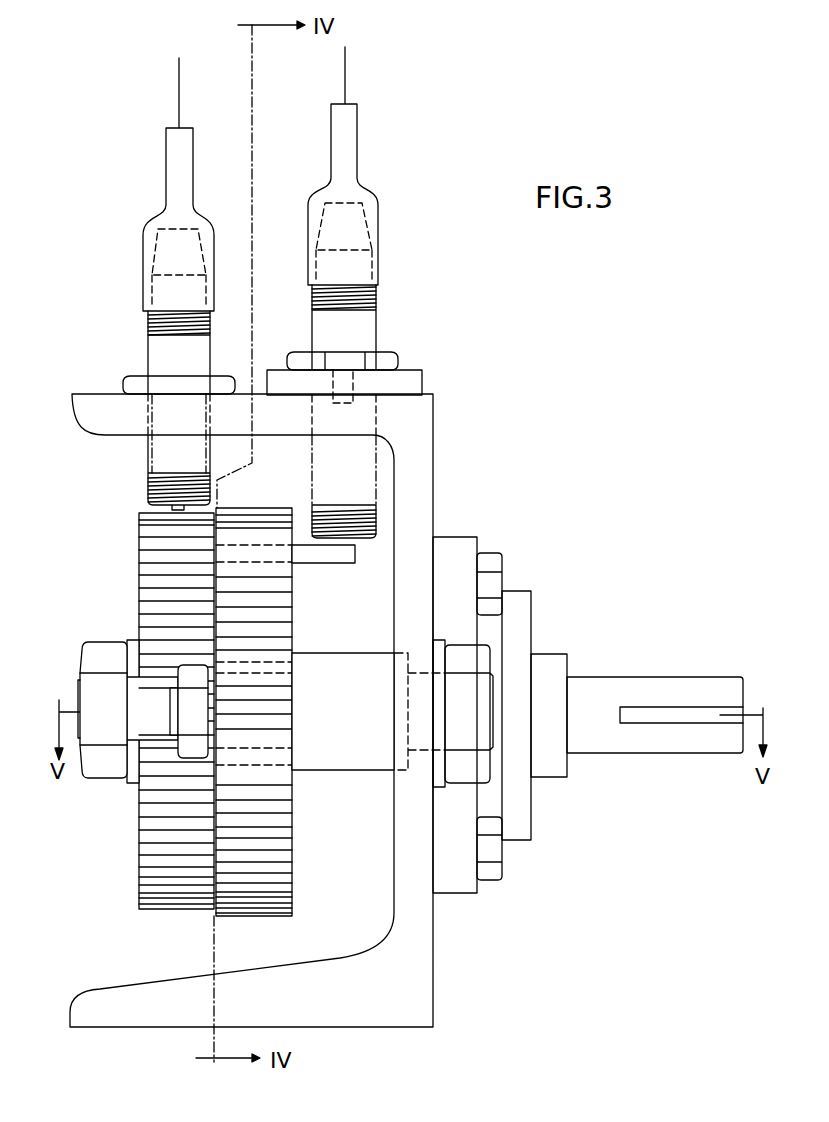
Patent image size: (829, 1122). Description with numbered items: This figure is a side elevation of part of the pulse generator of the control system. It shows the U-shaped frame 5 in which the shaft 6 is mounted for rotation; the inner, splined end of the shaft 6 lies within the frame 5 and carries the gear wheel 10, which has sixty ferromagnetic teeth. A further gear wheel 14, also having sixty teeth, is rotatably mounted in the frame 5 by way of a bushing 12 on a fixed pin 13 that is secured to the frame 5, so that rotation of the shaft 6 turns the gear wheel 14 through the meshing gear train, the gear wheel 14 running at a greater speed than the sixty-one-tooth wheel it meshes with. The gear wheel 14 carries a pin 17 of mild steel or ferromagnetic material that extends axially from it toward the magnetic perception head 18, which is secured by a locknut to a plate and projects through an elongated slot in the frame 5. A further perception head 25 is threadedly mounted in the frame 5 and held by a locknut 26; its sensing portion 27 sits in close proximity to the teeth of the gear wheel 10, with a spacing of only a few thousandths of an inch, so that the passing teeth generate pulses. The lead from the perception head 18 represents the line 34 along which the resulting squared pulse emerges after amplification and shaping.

The U-shaped frame 5 is at (421, 453).
The shaft 6 is at (608, 679).
The gear wheel 10 is at (142, 580).
The bushing 12 is at (286, 770).
The fixed pin 13 is at (345, 718).
The further gear wheel 14 is at (288, 619).
The pin 17 is at (322, 556).
The magnetic perception head 18 is at (376, 302).
The further perception head 25 is at (148, 325).
The locknut 26 is at (123, 384).
The sensing portion 27 is at (150, 507).
The line 34 is at (345, 79).